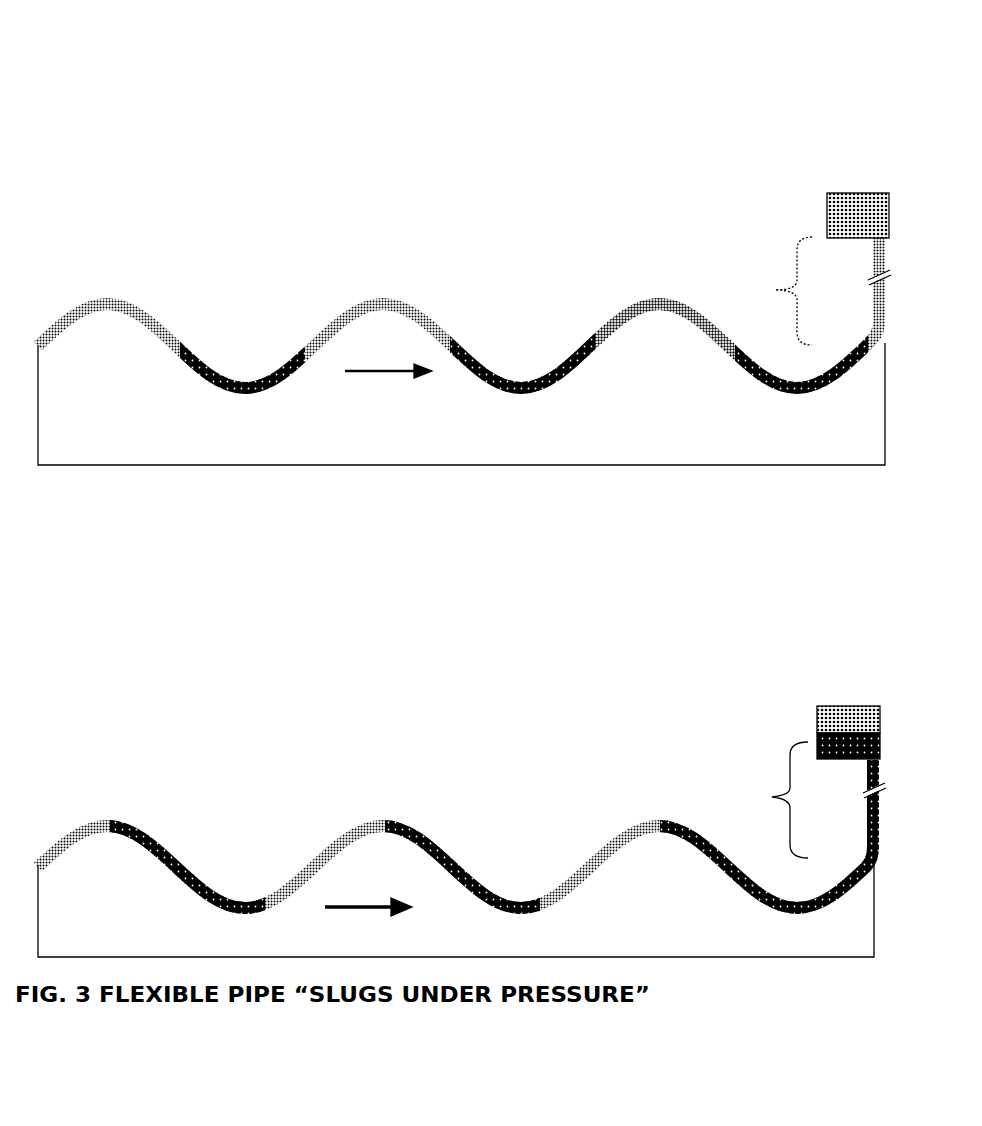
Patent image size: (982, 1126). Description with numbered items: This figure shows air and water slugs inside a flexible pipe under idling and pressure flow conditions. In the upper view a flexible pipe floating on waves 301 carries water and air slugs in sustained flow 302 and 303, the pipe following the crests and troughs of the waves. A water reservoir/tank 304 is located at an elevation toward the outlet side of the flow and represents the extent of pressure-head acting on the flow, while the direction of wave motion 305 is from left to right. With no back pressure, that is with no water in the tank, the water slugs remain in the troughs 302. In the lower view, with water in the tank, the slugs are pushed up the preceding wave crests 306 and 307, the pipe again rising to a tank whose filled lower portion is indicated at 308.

The flexible pipe floating on waves 301 is at (345, 262).
The water slug 302 is at (506, 338).
The air slug 303 is at (578, 283).
The water reservoir/tank 304 is at (765, 290).
The direction of wave motion 305 is at (327, 367).
The water slug pushed up wave crest 306 is at (468, 854).
The flexible pipe under pressure flow 307 is at (353, 818).
The riser section 308 is at (750, 795).